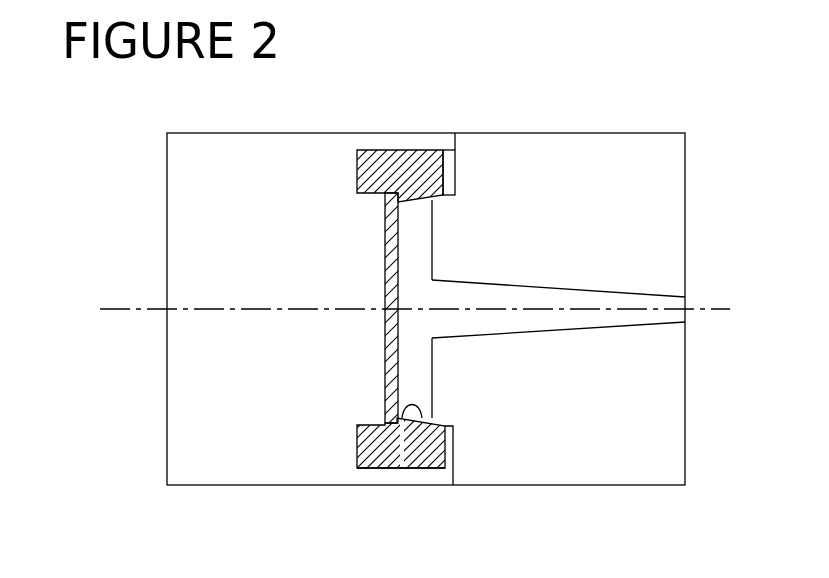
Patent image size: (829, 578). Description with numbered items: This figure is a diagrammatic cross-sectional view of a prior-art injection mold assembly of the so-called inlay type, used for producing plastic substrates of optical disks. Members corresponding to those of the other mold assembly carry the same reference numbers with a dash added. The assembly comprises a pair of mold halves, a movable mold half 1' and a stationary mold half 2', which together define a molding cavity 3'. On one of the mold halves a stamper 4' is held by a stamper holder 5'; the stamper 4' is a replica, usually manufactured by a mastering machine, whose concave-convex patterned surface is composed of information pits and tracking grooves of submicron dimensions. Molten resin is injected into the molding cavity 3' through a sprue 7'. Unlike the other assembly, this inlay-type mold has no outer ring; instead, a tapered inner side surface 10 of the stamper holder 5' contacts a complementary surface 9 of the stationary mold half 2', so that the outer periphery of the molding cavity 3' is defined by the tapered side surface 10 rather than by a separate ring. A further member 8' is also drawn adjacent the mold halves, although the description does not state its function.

The movable mold half 1' is at (400, 309).
The stationary mold half 2' is at (543, 239).
The molding cavity 3' is at (446, 319).
The stamper 4' is at (377, 485).
The stamper holder 5' is at (385, 512).
The sprue 7' is at (601, 288).
The upper support block 8' is at (412, 131).
The complementary surface 9 is at (435, 422).
The tapered inner side surface 10 is at (402, 418).